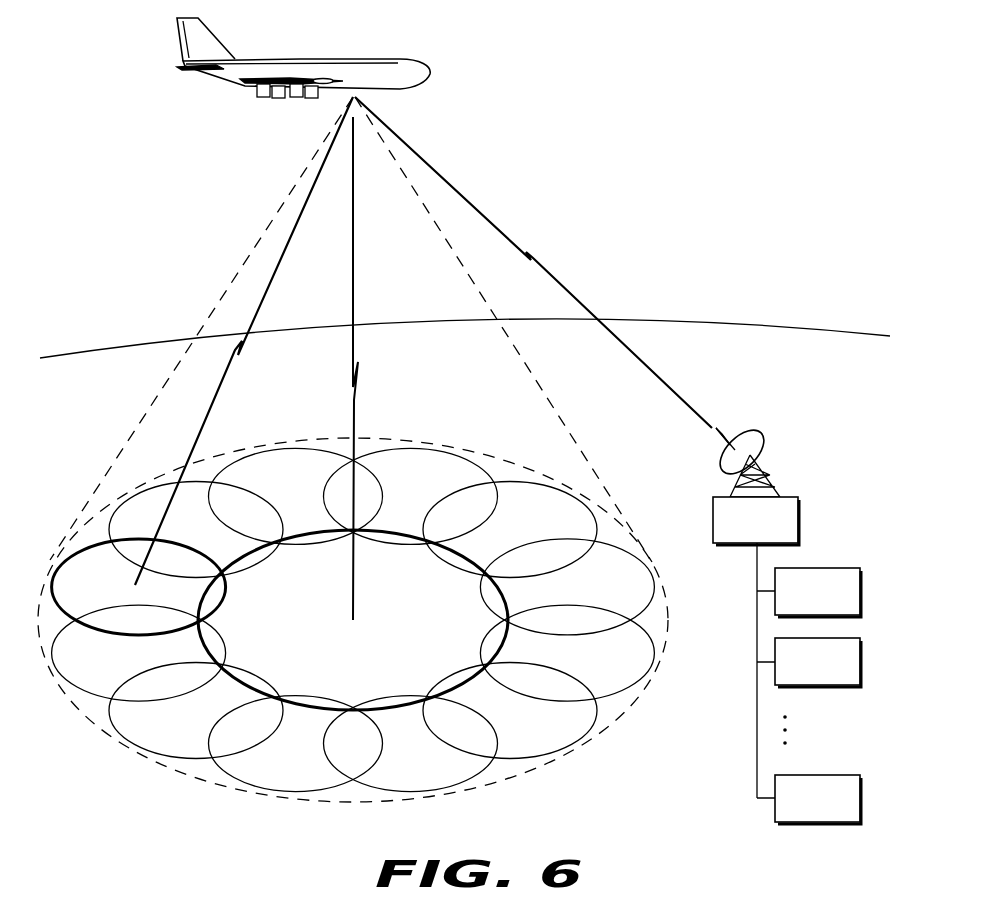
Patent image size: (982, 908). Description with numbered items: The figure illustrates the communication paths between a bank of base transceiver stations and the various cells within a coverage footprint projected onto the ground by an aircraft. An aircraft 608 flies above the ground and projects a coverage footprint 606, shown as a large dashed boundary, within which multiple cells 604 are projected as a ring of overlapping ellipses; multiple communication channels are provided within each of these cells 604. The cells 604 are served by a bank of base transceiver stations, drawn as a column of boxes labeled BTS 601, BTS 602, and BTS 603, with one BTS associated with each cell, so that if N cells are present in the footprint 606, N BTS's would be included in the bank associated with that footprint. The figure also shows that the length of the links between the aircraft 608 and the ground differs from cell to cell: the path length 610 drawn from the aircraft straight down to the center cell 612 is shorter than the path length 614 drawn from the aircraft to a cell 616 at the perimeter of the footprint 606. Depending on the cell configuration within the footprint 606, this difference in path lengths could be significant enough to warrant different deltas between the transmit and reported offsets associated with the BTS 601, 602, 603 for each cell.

The BTS 601 is at (840, 567).
The BTS 602 is at (838, 688).
The BTS 603 is at (838, 774).
The cell 604 is at (317, 764).
The coverage footprint 606 is at (620, 717).
The aircraft 608 is at (432, 70).
The path length 610 is at (355, 247).
The center cell 612 is at (309, 531).
The path length 614 is at (226, 388).
The cell at the perimeter of the footprint 616 is at (225, 597).